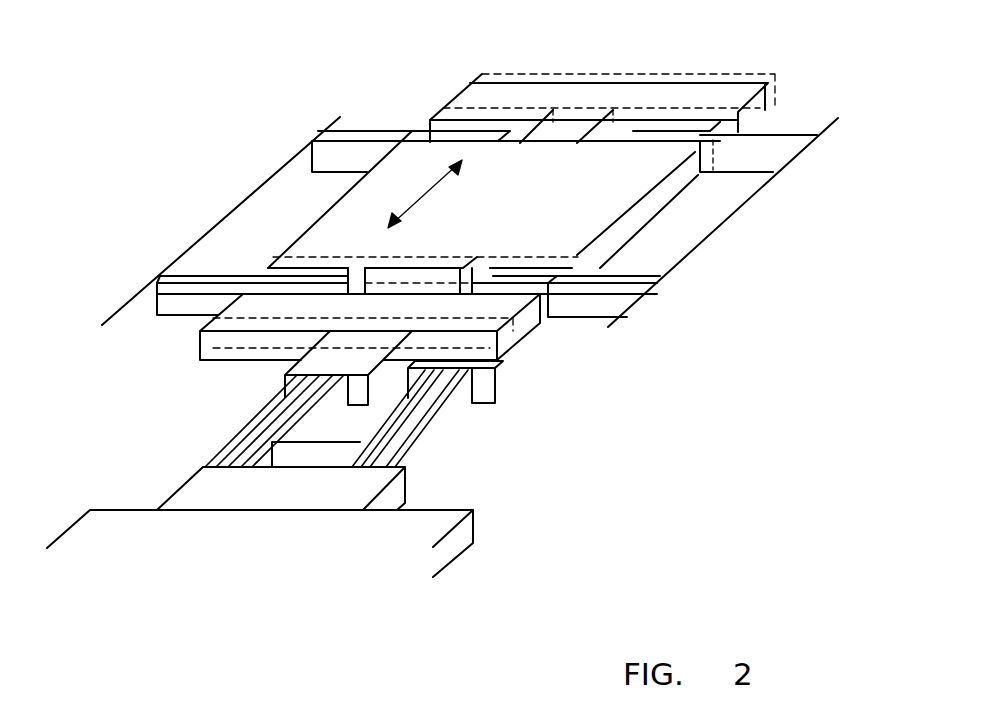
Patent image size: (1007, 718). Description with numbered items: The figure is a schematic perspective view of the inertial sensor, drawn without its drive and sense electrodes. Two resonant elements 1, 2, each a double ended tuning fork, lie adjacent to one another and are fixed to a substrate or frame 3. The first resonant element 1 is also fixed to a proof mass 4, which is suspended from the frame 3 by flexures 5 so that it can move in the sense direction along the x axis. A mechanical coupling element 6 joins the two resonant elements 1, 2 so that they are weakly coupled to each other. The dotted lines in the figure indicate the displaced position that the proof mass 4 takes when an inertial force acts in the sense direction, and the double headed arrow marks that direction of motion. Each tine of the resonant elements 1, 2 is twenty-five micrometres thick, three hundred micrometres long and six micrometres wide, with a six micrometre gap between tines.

The first resonant element 1 is at (270, 444).
The second resonant element 2 is at (437, 420).
The substrate or frame 3 is at (213, 203).
The proof mass 4 is at (423, 162).
The flexures 5 is at (333, 153).
The mechanical coupling element 6 is at (315, 457).